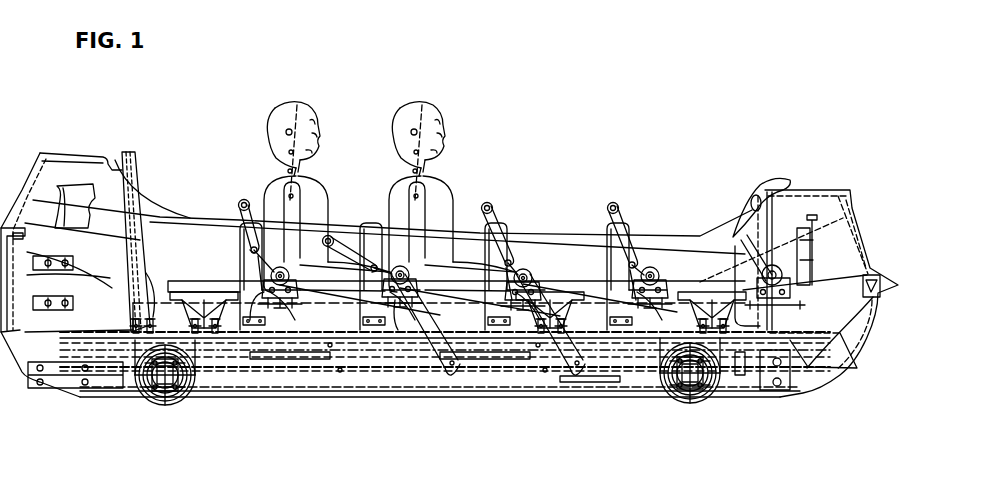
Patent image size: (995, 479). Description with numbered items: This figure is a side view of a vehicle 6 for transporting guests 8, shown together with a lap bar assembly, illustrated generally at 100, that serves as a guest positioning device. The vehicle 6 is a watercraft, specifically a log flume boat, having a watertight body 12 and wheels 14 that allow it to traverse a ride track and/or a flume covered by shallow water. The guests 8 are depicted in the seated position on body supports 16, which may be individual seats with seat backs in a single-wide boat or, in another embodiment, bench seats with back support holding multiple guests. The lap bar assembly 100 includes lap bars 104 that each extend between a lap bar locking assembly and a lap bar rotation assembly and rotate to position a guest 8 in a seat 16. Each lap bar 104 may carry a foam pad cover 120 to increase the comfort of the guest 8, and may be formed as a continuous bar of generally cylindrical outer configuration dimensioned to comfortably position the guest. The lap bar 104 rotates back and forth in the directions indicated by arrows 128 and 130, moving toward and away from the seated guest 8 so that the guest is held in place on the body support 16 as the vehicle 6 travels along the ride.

The vehicle 6 is at (806, 180).
The guests 8 is at (392, 103).
The watertight body 12 is at (162, 226).
The wheels 14 is at (150, 406).
The body supports 16 is at (407, 330).
The lap bar assembly 100 is at (722, 203).
The lap bar 104 is at (232, 212).
The foam pad cover 120 is at (243, 199).
The arrow 128 is at (348, 178).
The arrow 130 is at (475, 182).